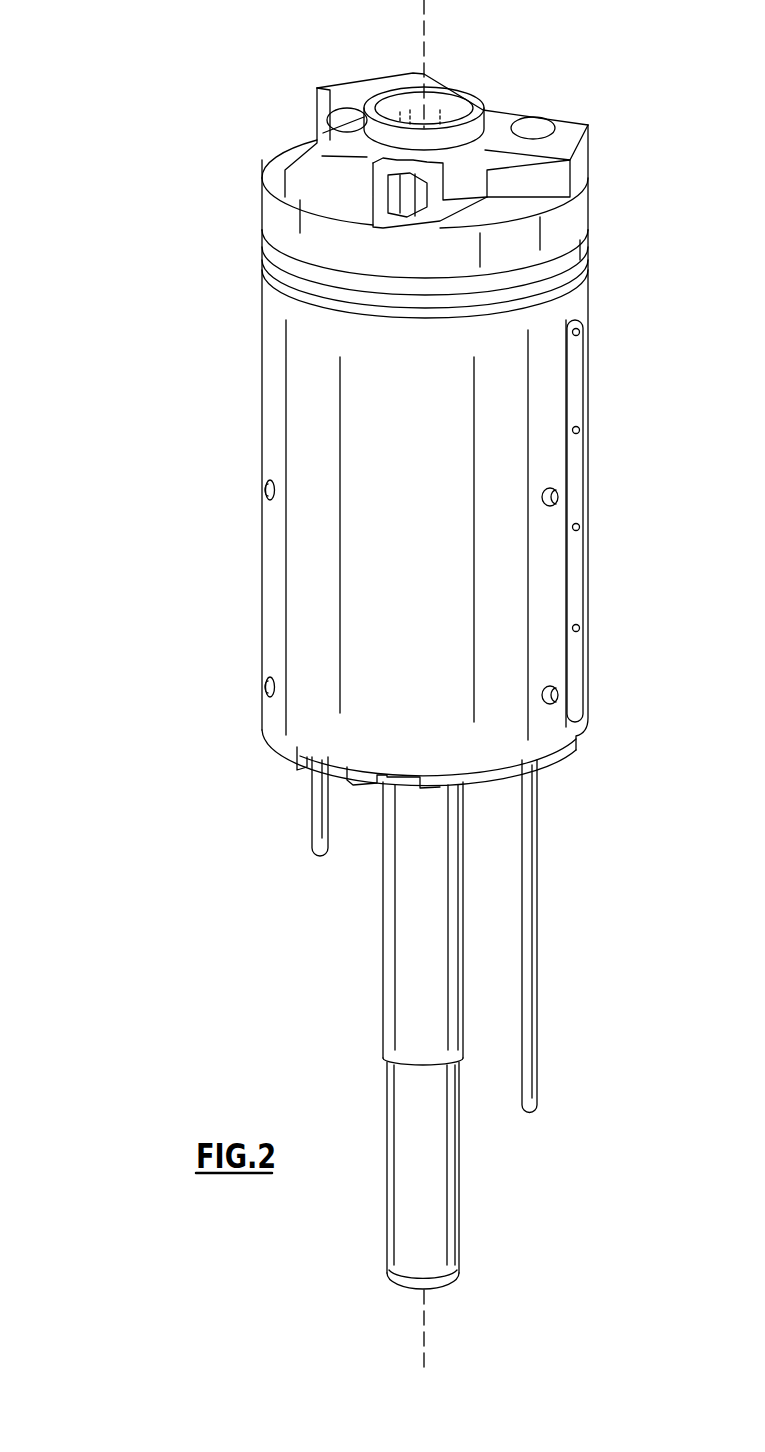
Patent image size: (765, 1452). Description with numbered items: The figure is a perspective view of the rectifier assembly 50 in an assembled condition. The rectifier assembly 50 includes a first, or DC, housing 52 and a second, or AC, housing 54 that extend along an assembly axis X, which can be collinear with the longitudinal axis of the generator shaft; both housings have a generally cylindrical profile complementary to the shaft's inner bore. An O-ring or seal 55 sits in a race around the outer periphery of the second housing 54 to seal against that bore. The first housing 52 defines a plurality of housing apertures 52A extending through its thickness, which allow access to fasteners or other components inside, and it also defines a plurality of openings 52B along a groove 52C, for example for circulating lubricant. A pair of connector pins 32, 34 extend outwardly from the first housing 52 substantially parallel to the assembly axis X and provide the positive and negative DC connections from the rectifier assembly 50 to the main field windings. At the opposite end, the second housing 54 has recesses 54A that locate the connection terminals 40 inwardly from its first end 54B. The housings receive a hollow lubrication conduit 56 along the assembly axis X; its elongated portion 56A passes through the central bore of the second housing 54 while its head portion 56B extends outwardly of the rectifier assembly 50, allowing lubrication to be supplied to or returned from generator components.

The assembly axis X is at (432, 36).
The rectifier assembly 50 is at (128, 102).
The first housing 52 is at (255, 375).
The housing apertures 52A is at (266, 490).
The openings 52B is at (580, 430).
The groove 52C is at (578, 387).
The second housing 54 is at (254, 157).
The recesses 54A is at (288, 148).
The first end 54B is at (567, 148).
The O-ring or seal 55 is at (578, 252).
The lubrication conduit 56 is at (434, 656).
The elongated portion 56A is at (386, 967).
The head portion 56B is at (440, 96).
The connection terminals 40 is at (332, 117).
The connector pin 32 is at (318, 815).
The connector pin 34 is at (533, 1010).